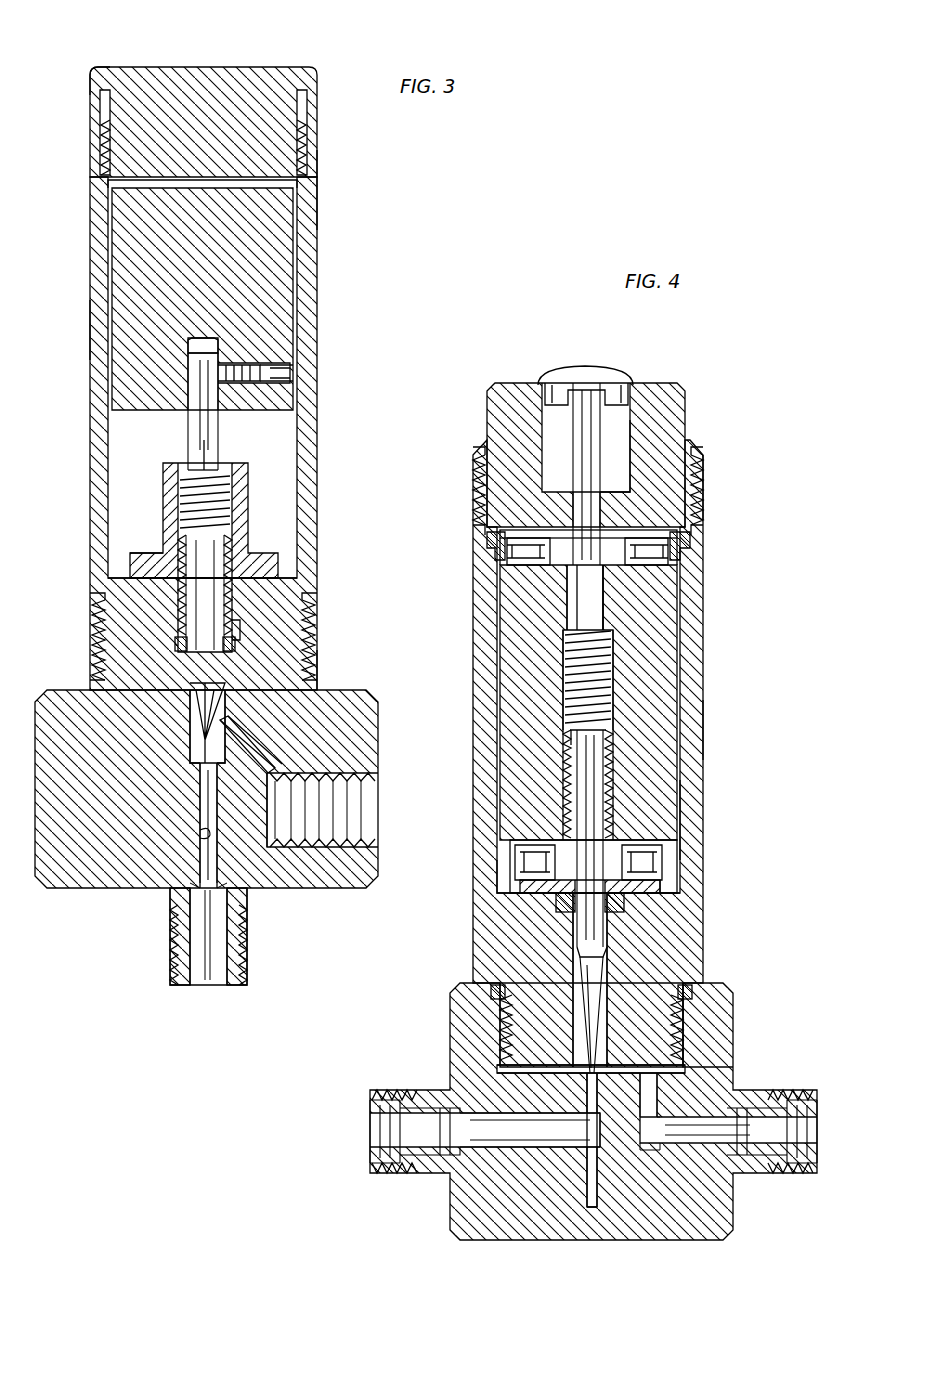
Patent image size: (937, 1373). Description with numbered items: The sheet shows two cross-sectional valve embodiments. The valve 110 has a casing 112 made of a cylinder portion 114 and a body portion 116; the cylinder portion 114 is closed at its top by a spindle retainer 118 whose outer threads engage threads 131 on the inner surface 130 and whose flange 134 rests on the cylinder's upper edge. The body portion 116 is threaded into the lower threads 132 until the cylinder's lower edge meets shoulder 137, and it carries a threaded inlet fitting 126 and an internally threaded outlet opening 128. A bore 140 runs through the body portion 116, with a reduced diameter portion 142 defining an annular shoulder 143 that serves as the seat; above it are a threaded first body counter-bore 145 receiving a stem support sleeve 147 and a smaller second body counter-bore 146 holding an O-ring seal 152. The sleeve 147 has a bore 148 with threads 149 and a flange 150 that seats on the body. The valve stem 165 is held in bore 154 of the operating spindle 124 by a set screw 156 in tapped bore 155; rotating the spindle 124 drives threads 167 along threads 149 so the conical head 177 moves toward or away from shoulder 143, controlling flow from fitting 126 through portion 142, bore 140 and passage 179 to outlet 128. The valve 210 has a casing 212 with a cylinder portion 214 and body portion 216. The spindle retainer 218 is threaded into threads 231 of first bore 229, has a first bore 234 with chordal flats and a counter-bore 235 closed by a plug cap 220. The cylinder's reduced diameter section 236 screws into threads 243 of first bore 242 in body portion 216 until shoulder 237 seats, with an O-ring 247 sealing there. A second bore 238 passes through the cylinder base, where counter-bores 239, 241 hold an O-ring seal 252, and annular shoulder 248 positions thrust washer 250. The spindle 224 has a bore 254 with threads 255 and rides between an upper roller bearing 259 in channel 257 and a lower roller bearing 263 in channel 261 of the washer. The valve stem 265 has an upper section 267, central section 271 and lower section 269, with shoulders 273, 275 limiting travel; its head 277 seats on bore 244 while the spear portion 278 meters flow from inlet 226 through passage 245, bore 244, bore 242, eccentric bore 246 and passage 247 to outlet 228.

In FIG. 3, the valve 110 is at (356, 200).
In FIG. 3, the casing 112 is at (63, 327).
In FIG. 3, the cylinder portion 114 is at (100, 237).
In FIG. 3, the body portion 116 is at (92, 898).
In FIG. 3, the spindle retainer 118 is at (180, 80).
In FIG. 3, the valve operating spindle 124 is at (290, 296).
In FIG. 3, the threaded inlet fitting 126 is at (178, 935).
In FIG. 3, the internally threaded outlet opening 128 is at (380, 776).
In FIG. 3, the inner surface 130 is at (290, 250).
In FIG. 3, the threads 131 is at (100, 150).
In FIG. 3, the threads 132 is at (95, 615).
In FIG. 3, the flange 134 is at (97, 80).
In FIG. 3, the shoulder 137 is at (340, 685).
In FIG. 3, the bore 140 is at (205, 983).
In FIG. 3, the reduced diameter portion 142 is at (200, 830).
In FIG. 3, the annular shoulder 143 is at (190, 748).
In FIG. 3, the first body counter-bore 145 is at (285, 582).
In FIG. 3, the second body counter-bore 146 is at (240, 630).
In FIG. 3, the stem support sleeve 147 is at (135, 545).
In FIG. 3, the bore 148 is at (186, 466).
In FIG. 3, the threads 149 is at (232, 550).
In FIG. 3, the flange 150 is at (130, 565).
In FIG. 3, the O-ring seal 152 is at (175, 645).
In FIG. 3, the bore 154 is at (192, 337).
In FIG. 3, the tapped bore 155 is at (295, 370).
In FIG. 3, the set screw 156 is at (240, 362).
In FIG. 3, the valve stem 165 is at (178, 432).
In FIG. 3, the threads 167 is at (210, 470).
In FIG. 3, the conical head 177 is at (200, 695).
In FIG. 3, the passage 179 is at (250, 740).
In FIG. 4, the valve 210 is at (737, 449).
In FIG. 4, the casing 212 is at (758, 700).
In FIG. 4, the cylinder portion 214 is at (695, 665).
In FIG. 4, the body portion 216 is at (470, 1212).
In FIG. 4, the spindle retainer 218 is at (500, 385).
In FIG. 4, the plug cap 220 is at (580, 366).
In FIG. 4, the valve operating spindle 224 is at (670, 624).
In FIG. 4, the inlet opening 226 is at (375, 1140).
In FIG. 4, the outlet opening 228 is at (805, 1140).
In FIG. 4, the first bore 229 is at (682, 808).
In FIG. 4, the threads 231 is at (700, 490).
In FIG. 4, the first bore 234 is at (575, 525).
In FIG. 4, the counter-bore 235 is at (625, 418).
In FIG. 4, the reduced diameter section 236 is at (700, 1040).
In FIG. 4, the shoulder 237 is at (715, 992).
In FIG. 4, the second bore 238 is at (608, 1003).
In FIG. 4, the counter-bore 239 is at (497, 885).
In FIG. 4, the counter-bore 241 is at (620, 912).
In FIG. 4, the first bore 242 is at (510, 1073).
In FIG. 4, the threads 243 is at (500, 1030).
In FIG. 4, the bore 244 is at (598, 1195).
In FIG. 4, the fluid passage 245 is at (540, 1140).
In FIG. 4, the eccentric bore 246 is at (660, 1160).
In FIG. 4, the fluid passage 247 is at (492, 988).
In FIG. 4, the annular shoulder 248 is at (677, 887).
In FIG. 4, the thrust washer 250 is at (662, 890).
In FIG. 4, the O-ring seal 252 is at (560, 912).
In FIG. 4, the bore 254 is at (572, 605).
In FIG. 4, the threads 255 is at (615, 768).
In FIG. 4, the annular channel 257 is at (487, 543).
In FIG. 4, the upper roller bearing 259 is at (690, 540).
In FIG. 4, the annular channel 261 is at (510, 862).
In FIG. 4, the lower roller bearing 263 is at (662, 860).
In FIG. 4, the valve stem 265 is at (612, 780).
In FIG. 4, the upper section 267 is at (580, 460).
In FIG. 4, the lower section 269 is at (580, 808).
In FIG. 4, the central section 271 is at (597, 616).
In FIG. 4, the annular shoulder 273 is at (605, 545).
In FIG. 4, the annular shoulder 275 is at (568, 750).
In FIG. 4, the head 277 is at (605, 952).
In FIG. 4, the spear portion 278 is at (585, 975).